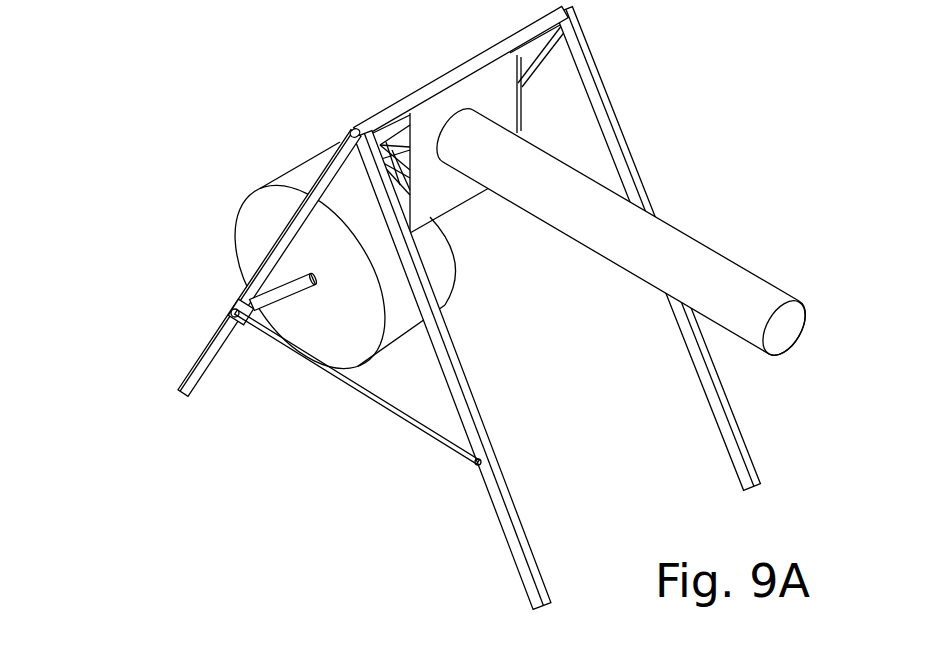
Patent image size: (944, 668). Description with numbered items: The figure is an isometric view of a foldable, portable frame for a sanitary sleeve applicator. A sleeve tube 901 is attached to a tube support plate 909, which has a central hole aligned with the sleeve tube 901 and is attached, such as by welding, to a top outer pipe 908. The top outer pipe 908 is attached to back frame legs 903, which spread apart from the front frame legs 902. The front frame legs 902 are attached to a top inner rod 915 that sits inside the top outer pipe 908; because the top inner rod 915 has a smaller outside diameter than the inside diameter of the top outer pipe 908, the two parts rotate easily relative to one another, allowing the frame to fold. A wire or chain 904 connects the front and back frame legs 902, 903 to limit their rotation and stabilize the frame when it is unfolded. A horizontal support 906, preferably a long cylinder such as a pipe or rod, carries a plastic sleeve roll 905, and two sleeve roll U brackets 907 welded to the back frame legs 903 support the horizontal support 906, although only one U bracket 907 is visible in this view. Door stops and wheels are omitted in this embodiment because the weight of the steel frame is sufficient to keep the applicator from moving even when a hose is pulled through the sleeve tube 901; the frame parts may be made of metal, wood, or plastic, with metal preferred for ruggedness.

The sleeve tube 901 is at (727, 240).
The front frame legs 902 is at (620, 100).
The back frame legs 903 is at (193, 362).
The wire (or chain) 904 is at (417, 433).
The plastic sleeve roll 905 is at (265, 172).
The horizontal support 906 is at (290, 290).
The sleeve roll U brackets 907 is at (258, 322).
The top outer pipe 908 is at (498, 47).
The tube support plate 909 is at (423, 117).
The top inner rod 915 is at (343, 138).